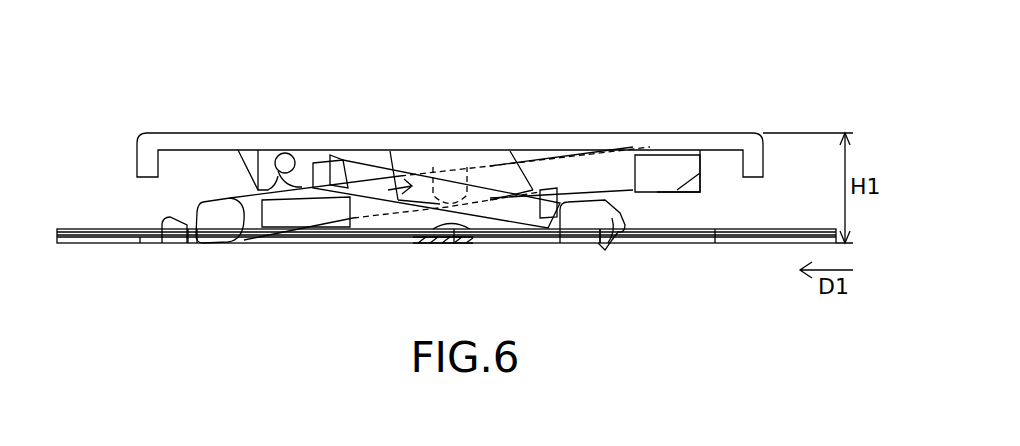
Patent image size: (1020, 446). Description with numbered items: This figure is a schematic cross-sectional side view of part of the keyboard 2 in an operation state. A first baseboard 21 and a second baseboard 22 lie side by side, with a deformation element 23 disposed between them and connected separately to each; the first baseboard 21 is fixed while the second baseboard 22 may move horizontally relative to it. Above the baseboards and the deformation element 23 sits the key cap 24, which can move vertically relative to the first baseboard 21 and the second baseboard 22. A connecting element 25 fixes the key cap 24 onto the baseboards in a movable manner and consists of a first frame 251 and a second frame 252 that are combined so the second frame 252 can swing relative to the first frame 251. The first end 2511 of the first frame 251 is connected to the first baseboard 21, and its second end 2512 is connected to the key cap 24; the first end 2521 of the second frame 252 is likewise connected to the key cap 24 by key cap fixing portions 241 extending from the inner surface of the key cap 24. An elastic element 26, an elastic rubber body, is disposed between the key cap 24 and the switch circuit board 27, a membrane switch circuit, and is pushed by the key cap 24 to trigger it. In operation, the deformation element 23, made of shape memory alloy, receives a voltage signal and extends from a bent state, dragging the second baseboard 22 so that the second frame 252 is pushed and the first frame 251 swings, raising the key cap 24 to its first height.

The keyboard 2 is at (276, 63).
The first baseboard 21 is at (128, 242).
The second baseboard 22 is at (730, 240).
The deformation element 23 is at (462, 240).
The key cap 24 is at (165, 138).
The key cap fixing portions 241 is at (268, 160).
The connecting element 25 is at (352, 227).
The first frame 251 is at (583, 175).
The first end of the first frame 2511 is at (213, 226).
The second end of the first frame 2512 is at (675, 165).
The second frame 252 is at (317, 187).
The first end of the second frame 2521 is at (287, 155).
The elastic element 26 is at (458, 160).
The switch circuit board 27 is at (114, 228).